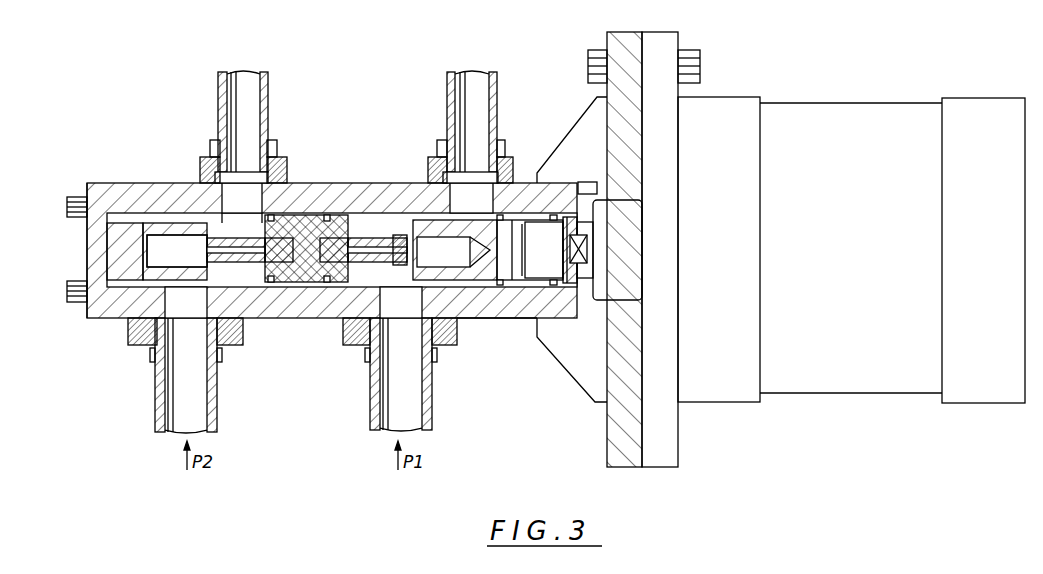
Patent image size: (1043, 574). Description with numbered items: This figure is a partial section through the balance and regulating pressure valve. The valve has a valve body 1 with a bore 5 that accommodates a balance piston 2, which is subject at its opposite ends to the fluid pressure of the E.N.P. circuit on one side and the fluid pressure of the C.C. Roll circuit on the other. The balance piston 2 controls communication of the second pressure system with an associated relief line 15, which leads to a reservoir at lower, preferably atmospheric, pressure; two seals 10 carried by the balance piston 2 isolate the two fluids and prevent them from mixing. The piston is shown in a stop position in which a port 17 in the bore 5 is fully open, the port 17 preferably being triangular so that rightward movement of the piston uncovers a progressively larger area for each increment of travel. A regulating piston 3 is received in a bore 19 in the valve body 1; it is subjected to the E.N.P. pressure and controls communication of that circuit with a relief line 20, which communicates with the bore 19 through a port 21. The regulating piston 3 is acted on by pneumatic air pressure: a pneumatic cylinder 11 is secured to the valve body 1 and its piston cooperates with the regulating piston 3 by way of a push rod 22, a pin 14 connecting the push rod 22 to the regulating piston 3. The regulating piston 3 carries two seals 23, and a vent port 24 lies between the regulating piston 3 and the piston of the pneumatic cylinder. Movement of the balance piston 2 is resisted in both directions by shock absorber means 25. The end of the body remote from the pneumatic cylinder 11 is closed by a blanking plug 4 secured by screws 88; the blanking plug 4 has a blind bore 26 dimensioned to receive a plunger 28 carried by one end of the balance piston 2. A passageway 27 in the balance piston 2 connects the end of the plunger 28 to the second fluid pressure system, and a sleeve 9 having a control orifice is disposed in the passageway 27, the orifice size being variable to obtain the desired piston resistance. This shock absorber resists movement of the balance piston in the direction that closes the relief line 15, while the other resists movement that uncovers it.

The valve body 1 is at (329, 177).
The balance piston 2 is at (288, 293).
The regulating piston 3 is at (510, 318).
The blanking plug 4 is at (100, 183).
The bore 5 is at (309, 283).
The sleeve 9 is at (205, 250).
The seals 10 is at (262, 283).
The pneumatic cylinder 11 is at (760, 97).
The pin 14 is at (565, 215).
The relief line 15 is at (268, 90).
The port 17 is at (253, 180).
The bore 19 is at (443, 335).
The relief line 20 is at (497, 92).
The port 21 is at (463, 204).
The push rod 22 is at (535, 262).
The seals 23 is at (497, 283).
The vent port 24 is at (587, 182).
The shock absorber means 25 is at (240, 347).
The blind bore 26 is at (137, 223).
The passageway 27 is at (212, 180).
The plunger 28 is at (215, 240).
The screws 88 is at (72, 302).